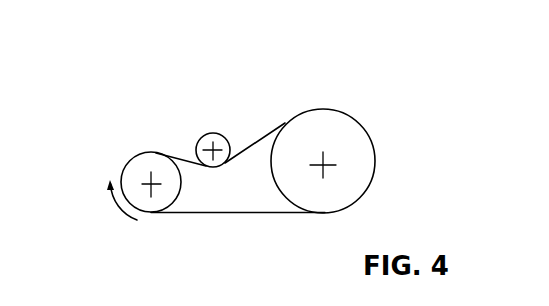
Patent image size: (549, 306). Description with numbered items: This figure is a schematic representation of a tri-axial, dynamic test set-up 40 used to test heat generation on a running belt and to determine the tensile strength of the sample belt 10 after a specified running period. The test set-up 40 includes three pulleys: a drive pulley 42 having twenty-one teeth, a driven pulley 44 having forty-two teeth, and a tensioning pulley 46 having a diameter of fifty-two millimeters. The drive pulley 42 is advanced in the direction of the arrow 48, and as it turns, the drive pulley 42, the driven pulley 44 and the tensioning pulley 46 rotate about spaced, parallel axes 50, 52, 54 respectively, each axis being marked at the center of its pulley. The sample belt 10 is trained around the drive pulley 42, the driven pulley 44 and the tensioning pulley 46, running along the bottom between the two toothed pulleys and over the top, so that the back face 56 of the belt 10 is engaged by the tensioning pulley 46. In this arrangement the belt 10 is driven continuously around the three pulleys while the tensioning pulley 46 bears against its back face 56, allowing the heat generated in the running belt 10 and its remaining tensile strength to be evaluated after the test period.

The sample belt 10 is at (282, 213).
The test set-up 40 is at (381, 131).
The drive pulley 42 is at (155, 205).
The driven pulley 44 is at (356, 178).
The tensioning pulley 46 is at (227, 137).
The arrow 48 is at (118, 214).
The axis 50 is at (162, 174).
The axis 52 is at (327, 162).
The axis 54 is at (212, 148).
The back face 56 is at (272, 129).